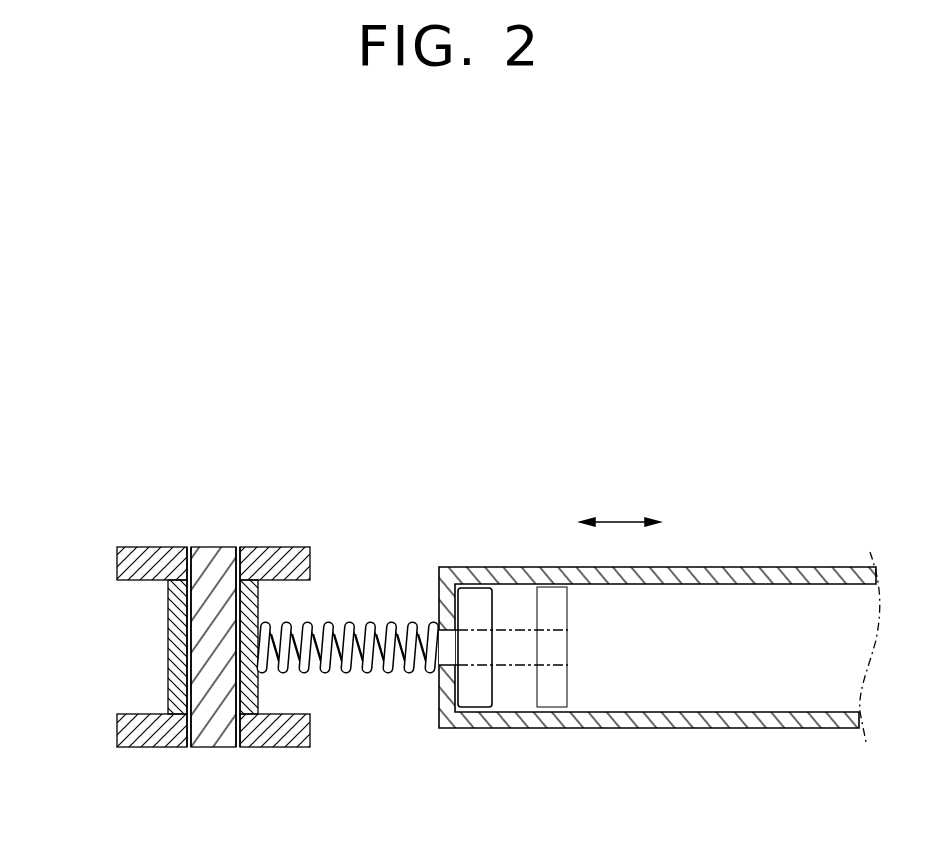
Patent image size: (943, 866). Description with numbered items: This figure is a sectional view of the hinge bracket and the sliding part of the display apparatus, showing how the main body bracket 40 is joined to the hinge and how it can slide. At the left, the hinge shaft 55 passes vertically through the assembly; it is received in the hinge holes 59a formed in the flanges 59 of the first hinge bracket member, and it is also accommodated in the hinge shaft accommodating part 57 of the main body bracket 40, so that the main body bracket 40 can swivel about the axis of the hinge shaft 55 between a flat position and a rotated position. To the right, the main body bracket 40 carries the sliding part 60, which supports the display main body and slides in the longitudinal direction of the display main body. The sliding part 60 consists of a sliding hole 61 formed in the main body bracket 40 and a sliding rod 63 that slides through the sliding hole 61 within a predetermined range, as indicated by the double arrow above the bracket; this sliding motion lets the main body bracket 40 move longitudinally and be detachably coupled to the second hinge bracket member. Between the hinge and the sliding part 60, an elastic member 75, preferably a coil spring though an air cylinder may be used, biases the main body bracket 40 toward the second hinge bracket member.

The main body bracket 40 is at (725, 567).
The hinge shaft 55 is at (218, 565).
The hinge shaft accommodating part 57 is at (244, 580).
The flanges 59 is at (125, 733).
The hinge holes 59a is at (187, 565).
The sliding part 60 is at (495, 569).
The sliding hole 61 is at (448, 638).
The sliding rod 63 is at (457, 615).
The elastic member 75 is at (350, 618).